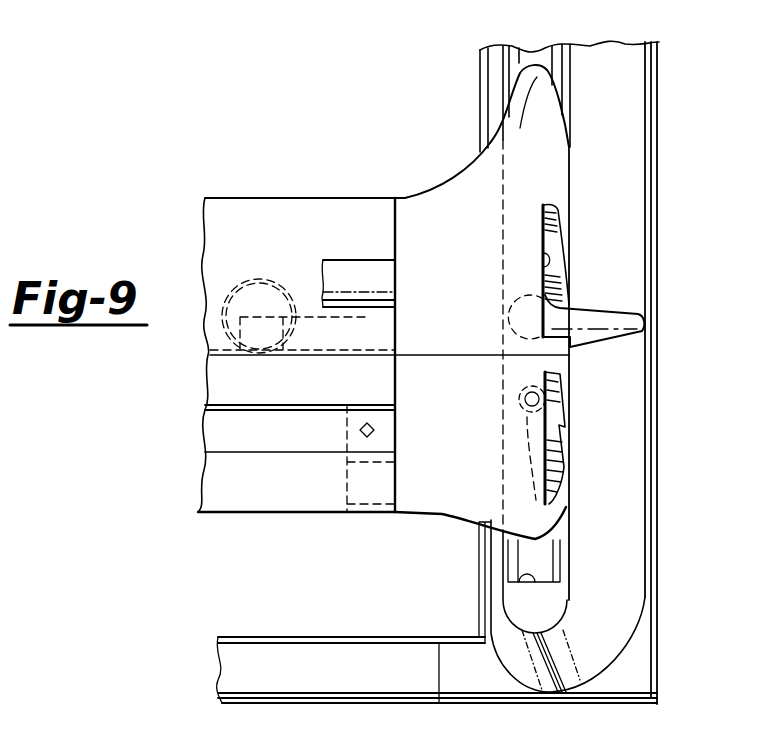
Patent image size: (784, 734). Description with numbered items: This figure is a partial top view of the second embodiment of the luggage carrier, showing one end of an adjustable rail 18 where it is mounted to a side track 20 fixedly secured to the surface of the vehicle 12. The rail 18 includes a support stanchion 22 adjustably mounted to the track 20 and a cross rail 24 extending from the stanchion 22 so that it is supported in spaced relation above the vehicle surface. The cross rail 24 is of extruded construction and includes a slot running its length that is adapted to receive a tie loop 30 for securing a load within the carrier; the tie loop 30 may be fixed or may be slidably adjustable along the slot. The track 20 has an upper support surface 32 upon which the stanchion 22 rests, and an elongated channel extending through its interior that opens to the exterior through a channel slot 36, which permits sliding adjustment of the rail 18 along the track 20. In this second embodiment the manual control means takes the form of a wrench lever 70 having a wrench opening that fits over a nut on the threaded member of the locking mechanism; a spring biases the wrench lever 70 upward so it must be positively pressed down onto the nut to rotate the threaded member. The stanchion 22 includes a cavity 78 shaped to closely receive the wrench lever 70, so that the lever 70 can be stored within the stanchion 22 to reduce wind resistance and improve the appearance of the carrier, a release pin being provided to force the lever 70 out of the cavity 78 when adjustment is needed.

The vehicle 12 is at (272, 110).
The adjustable rail 18 is at (207, 338).
The side track 20 is at (629, 34).
The support stanchion 22 is at (447, 193).
The cross rail 24 is at (221, 220).
The tie loop 30 is at (266, 280).
The upper support surface 32 is at (549, 603).
The channel slot 36 is at (535, 587).
The wrench lever 70 is at (622, 343).
The cavity 78 is at (545, 267).